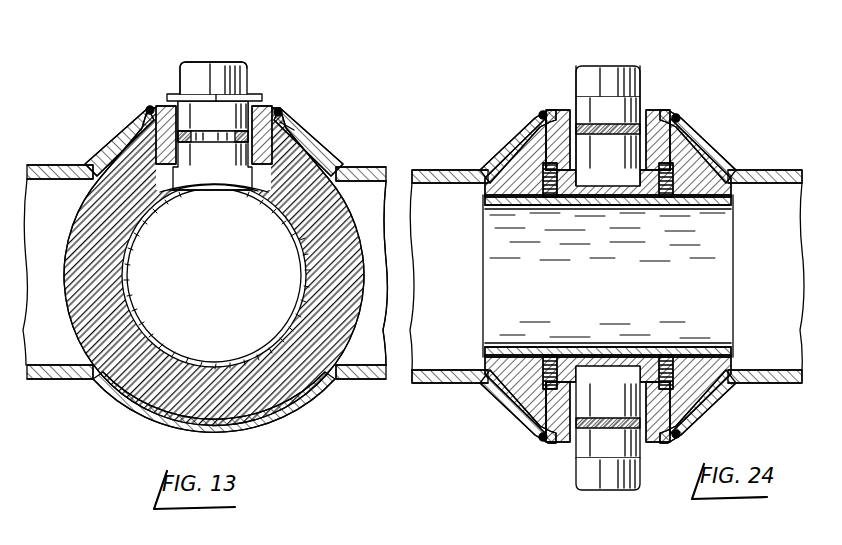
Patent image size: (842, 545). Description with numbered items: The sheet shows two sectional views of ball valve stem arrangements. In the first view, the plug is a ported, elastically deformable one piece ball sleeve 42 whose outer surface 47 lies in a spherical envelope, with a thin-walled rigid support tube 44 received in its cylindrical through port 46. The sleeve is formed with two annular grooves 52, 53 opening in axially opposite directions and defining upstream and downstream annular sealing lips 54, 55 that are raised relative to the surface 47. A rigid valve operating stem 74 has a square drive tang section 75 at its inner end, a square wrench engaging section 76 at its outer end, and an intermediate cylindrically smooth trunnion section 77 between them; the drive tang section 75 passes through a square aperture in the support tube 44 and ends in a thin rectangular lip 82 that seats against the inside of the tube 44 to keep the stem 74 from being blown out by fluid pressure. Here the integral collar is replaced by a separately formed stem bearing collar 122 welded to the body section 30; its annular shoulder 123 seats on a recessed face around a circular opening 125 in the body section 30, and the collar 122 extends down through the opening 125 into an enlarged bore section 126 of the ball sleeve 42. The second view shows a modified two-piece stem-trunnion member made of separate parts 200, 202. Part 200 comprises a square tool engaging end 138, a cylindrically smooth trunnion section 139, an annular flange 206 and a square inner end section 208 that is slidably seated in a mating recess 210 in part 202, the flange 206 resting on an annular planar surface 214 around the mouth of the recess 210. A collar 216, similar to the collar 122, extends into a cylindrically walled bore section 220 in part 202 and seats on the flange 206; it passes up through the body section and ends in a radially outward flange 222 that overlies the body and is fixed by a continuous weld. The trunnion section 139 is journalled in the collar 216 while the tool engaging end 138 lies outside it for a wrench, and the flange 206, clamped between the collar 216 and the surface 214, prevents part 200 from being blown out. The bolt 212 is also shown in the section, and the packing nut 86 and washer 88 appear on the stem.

In FIG. 13, the body section 30 is at (116, 411).
In FIG. 13, the ball sleeve 42 is at (342, 251).
In FIG. 13, the support tube 44 is at (286, 222).
In FIG. 13, the through port 46 is at (296, 244).
In FIG. 13, the surface of ball sleeve 47 is at (366, 250).
In FIG. 13, the annular groove 52 is at (74, 180).
In FIG. 13, the annular groove 53 is at (336, 186).
In FIG. 13, the annular sealing lip 54 is at (114, 144).
In FIG. 13, the annular sealing lip 55 is at (331, 157).
In FIG. 13, the valve operating stem 74 is at (238, 66).
In FIG. 13, the drive tang section 75 is at (198, 190).
In FIG. 13, the wrench engaging section 76 is at (202, 68).
In FIG. 13, the trunnion section 77 is at (223, 163).
In FIG. 13, the lip 82 is at (228, 188).
In FIG. 13, the packing nut 86 is at (238, 128).
In FIG. 13, the washer 88 is at (260, 99).
In FIG. 13, the stem bearing collar 122 is at (284, 114).
In FIG. 13, the annular shoulder 123 is at (280, 120).
In FIG. 13, the circular opening 125 is at (150, 106).
In FIG. 13, the enlarged bore section 126 is at (292, 131).
In FIG. 24, the tool engaging end 138 is at (614, 66).
In FIG. 24, the trunnion section 139 is at (648, 103).
In FIG. 24, the part 200 is at (649, 91).
In FIG. 24, the part 202 is at (737, 167).
In FIG. 24, the annular flange 206 is at (692, 139).
In FIG. 24, the inner end section 208 is at (650, 208).
In FIG. 24, the recess 210 is at (592, 206).
In FIG. 24, the bolt 212 is at (608, 276).
In FIG. 24, the annular planar surface 214 is at (560, 139).
In FIG. 24, the collar 216 is at (681, 117).
In FIG. 24, the bore section 220 is at (562, 126).
In FIG. 24, the flange 222 is at (541, 111).